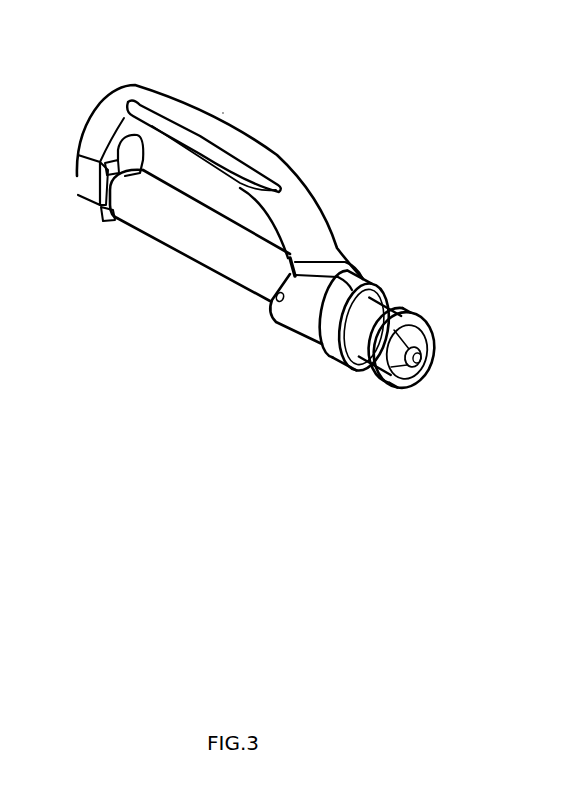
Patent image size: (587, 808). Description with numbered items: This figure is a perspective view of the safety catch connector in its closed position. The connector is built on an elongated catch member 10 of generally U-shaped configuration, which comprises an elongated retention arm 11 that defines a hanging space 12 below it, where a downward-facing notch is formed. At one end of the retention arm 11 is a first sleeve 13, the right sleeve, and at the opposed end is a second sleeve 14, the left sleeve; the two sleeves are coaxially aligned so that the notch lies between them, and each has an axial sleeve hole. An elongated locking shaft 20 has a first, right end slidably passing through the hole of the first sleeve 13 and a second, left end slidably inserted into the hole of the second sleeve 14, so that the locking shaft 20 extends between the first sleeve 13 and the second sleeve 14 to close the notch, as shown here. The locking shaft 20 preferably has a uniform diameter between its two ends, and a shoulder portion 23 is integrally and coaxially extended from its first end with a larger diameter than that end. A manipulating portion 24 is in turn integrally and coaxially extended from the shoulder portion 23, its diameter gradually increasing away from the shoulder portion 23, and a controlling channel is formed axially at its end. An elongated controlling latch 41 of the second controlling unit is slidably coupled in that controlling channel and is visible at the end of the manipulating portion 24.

The catch member 10 is at (223, 115).
The retention arm 11 is at (258, 158).
The hanging space 12 is at (164, 165).
The first sleeve 13 is at (318, 300).
The second sleeve 14 is at (80, 188).
The locking shaft 20 is at (182, 230).
The shoulder portion 23 is at (362, 282).
The manipulating portion 24 is at (390, 318).
The controlling latch 41 is at (423, 363).